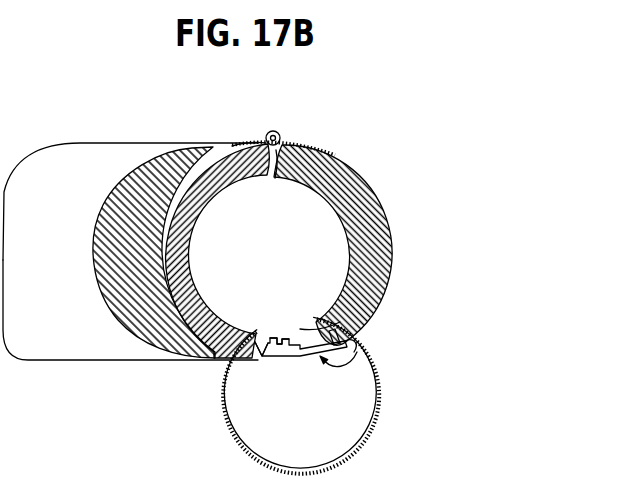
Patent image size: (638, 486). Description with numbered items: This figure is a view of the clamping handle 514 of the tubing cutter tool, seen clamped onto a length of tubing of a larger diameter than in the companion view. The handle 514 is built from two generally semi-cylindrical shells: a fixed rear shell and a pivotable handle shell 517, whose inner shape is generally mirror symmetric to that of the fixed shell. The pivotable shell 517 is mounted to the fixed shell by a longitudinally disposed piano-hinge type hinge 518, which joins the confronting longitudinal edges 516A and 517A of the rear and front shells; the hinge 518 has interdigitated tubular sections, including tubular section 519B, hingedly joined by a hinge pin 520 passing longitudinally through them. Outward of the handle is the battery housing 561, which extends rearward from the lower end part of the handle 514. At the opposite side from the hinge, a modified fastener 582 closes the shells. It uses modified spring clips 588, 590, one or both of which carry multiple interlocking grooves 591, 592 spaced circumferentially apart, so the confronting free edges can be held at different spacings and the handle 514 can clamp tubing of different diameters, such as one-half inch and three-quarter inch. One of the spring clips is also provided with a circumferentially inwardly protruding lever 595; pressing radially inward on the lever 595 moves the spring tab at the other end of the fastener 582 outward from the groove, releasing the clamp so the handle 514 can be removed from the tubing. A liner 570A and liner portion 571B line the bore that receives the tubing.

The clamping handle 514 is at (95, 284).
The longitudinally disposed edge of rear handle shell 516A is at (243, 142).
The pivotable handle shell 517 is at (381, 203).
The longitudinally disposed edge of front handle shell 517A is at (287, 136).
The hinge 518 is at (252, 137).
The tubular section 519B is at (308, 142).
The hinge pin 520 is at (277, 130).
The battery housing 561 is at (68, 150).
The liner 570A is at (266, 332).
The liner portion 571B is at (312, 326).
The modified fastener 582 is at (265, 380).
The modified spring clip 588 is at (261, 361).
The modified spring clip 590 is at (324, 362).
The interlocking groove 591 is at (289, 356).
The interlocking groove 592 is at (277, 356).
The lever 595 is at (353, 352).